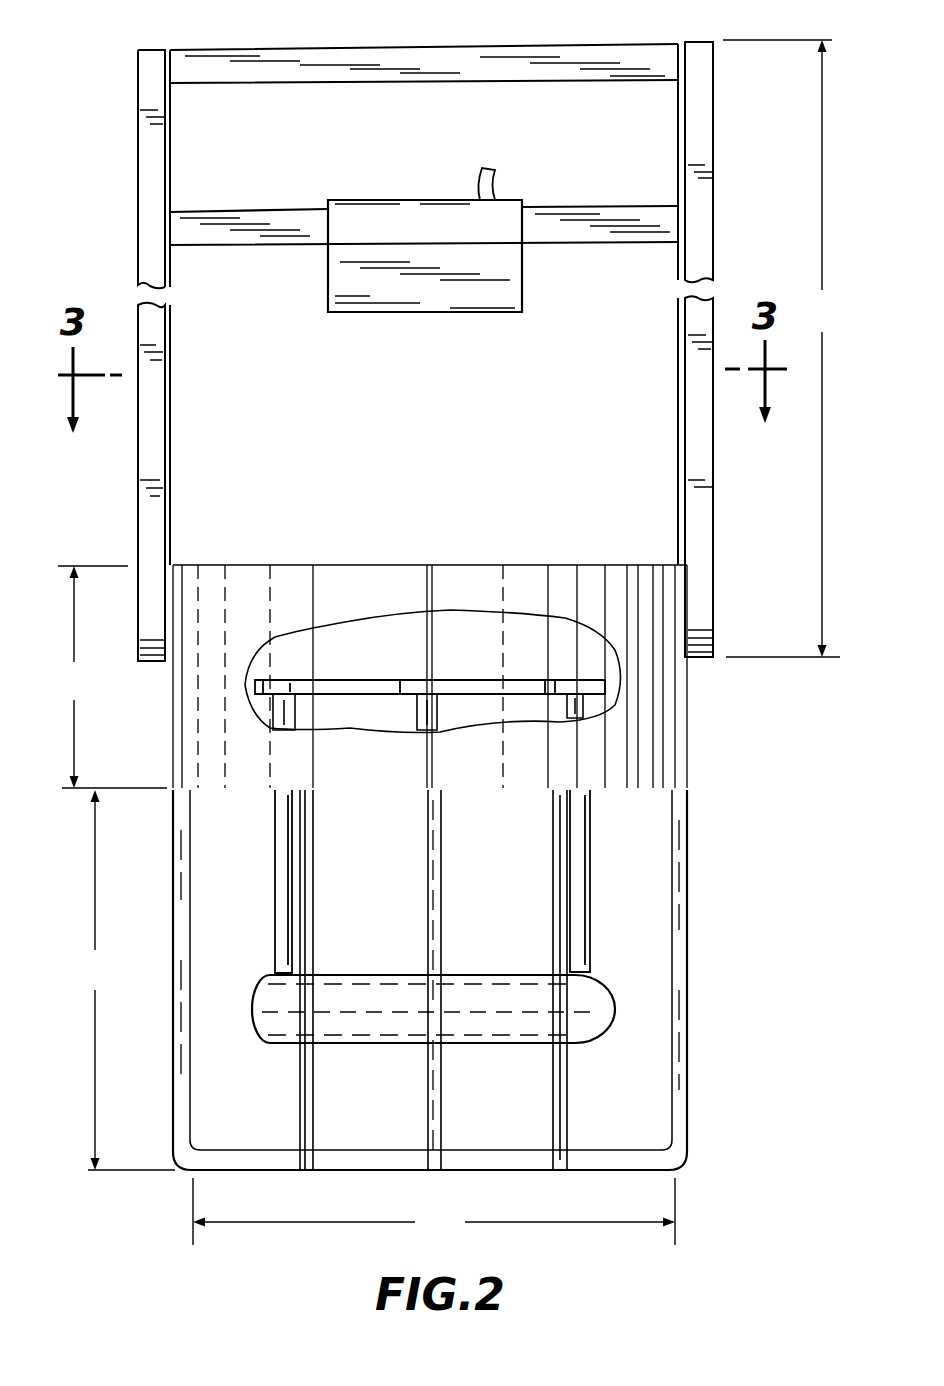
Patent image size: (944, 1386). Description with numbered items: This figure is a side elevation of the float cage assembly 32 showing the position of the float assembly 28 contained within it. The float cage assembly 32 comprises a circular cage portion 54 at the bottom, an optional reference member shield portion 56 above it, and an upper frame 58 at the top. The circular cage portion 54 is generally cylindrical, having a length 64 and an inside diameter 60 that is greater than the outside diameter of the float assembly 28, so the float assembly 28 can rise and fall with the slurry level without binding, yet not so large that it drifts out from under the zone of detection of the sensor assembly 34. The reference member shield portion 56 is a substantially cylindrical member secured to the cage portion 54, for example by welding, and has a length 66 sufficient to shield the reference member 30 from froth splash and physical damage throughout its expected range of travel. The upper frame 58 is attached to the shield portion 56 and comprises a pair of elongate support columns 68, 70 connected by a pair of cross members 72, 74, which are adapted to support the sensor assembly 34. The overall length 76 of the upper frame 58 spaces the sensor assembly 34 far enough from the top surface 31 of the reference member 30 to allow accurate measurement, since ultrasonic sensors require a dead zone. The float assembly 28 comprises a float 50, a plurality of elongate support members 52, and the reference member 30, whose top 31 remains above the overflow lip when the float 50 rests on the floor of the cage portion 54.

The cross member 72 is at (420, 44).
The upper frame 58 is at (138, 162).
The elongate support column 68 is at (173, 390).
The elongate support column 70 is at (678, 436).
The cross member 74 is at (282, 212).
The sensor assembly 34 is at (487, 312).
The float cage assembly 32 is at (700, 705).
The reference member shield portion 56 is at (690, 772).
The reference member 30 is at (498, 670).
The top surface of reference member 31 is at (397, 680).
The circular cage portion 54 is at (690, 982).
The elongate support member 52 is at (275, 885).
The float 50 is at (392, 1050).
The float assembly 28 is at (600, 1050).
The overall length of upper frame 76 is at (781, 348).
The length of shield portion 66 is at (112, 677).
The length of circular cage portion 64 is at (127, 980).
The inside diameter of circular cage portion 60 is at (434, 1211).